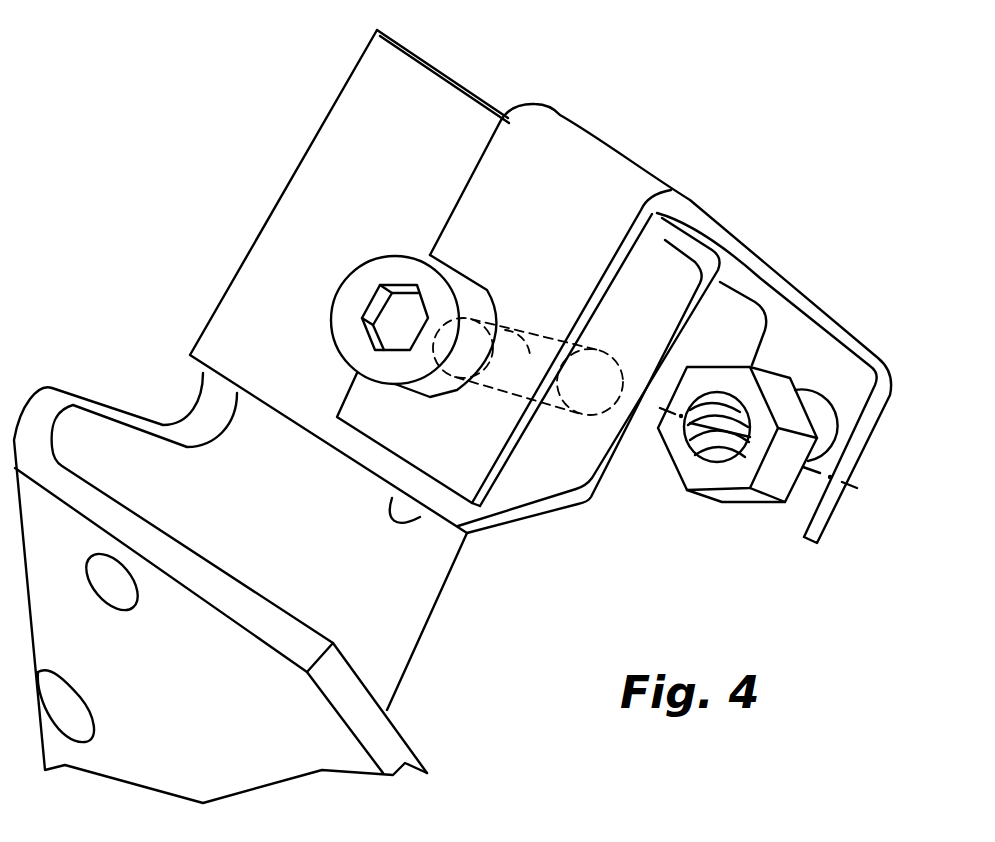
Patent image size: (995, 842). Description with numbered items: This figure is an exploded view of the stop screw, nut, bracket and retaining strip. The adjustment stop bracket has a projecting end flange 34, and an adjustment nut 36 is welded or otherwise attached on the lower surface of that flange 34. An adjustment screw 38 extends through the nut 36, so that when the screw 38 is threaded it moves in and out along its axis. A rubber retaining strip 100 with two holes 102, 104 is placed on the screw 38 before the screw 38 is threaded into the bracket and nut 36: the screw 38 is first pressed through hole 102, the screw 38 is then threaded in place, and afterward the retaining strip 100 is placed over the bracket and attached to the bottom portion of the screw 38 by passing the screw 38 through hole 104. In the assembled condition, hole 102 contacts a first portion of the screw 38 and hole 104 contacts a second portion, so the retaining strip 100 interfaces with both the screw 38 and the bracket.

The projecting end flange 34 is at (447, 77).
The rubber retaining strip 100 is at (600, 137).
The adjustment screw 38 is at (380, 285).
The hole 102 is at (485, 385).
The hole 104 is at (540, 320).
The adjustment nut 36 is at (728, 497).